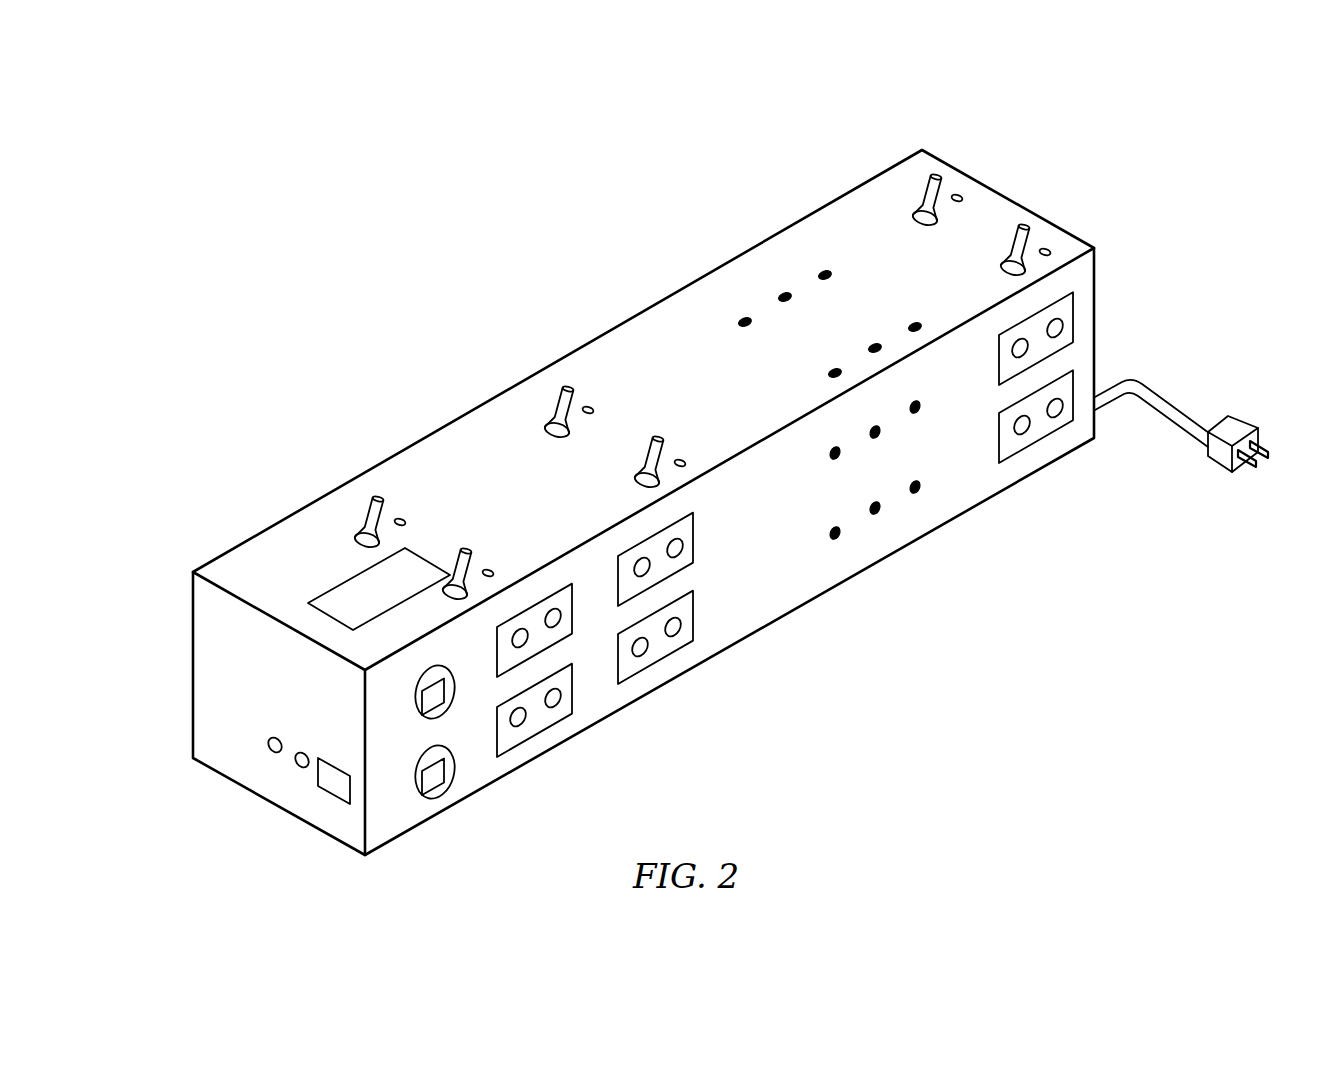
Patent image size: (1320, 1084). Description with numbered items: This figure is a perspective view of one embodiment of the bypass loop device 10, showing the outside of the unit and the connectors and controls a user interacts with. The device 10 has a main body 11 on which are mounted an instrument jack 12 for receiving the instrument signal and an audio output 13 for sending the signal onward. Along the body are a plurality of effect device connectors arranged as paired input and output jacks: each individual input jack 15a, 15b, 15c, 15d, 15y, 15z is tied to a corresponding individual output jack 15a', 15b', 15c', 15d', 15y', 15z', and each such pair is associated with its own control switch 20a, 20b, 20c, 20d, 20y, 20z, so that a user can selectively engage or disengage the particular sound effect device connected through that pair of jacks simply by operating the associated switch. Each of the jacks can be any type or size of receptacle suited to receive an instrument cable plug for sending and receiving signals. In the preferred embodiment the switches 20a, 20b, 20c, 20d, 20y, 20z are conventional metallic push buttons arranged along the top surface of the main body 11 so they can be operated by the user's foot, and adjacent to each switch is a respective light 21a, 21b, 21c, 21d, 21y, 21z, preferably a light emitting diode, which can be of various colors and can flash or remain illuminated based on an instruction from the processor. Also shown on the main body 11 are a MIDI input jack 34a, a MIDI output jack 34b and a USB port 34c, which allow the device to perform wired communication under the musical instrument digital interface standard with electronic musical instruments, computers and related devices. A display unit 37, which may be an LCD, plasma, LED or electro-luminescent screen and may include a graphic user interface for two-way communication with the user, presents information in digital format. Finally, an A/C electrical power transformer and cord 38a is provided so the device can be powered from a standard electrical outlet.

The bypass loop device 10 is at (606, 502).
The main body 11 is at (228, 643).
The instrument jack 12 is at (420, 701).
The audio output 13 is at (435, 780).
The input jack 15a is at (534, 607).
The output jack 15a' is at (566, 571).
The input jack 15b is at (534, 744).
The output jack 15b' is at (583, 739).
The input jack 15c is at (641, 539).
The output jack 15c' is at (713, 526).
The input jack 15d is at (655, 672).
The output jack 15d' is at (700, 669).
The input jack 15y is at (1030, 457).
The output jack 15y' is at (1090, 444).
The input jack 15z is at (1001, 328).
The output jack 15z' is at (1099, 304).
The control switch 20a is at (460, 568).
The control switch 20b is at (364, 520).
The control switch 20c is at (652, 454).
The control switch 20d is at (557, 410).
The control switch 20y is at (1018, 235).
The control switch 20z is at (915, 190).
The light 21a is at (488, 567).
The light 21b is at (399, 516).
The light 21c is at (680, 458).
The light 21d is at (588, 404).
The light 21y is at (1045, 247).
The light 21z is at (956, 192).
The MIDI input jack 34a is at (272, 753).
The MIDI output jack 34b is at (300, 768).
The USB port 34c is at (334, 787).
The display unit 37 is at (399, 600).
The A/C electrical power transformer and cord 38a is at (1170, 397).